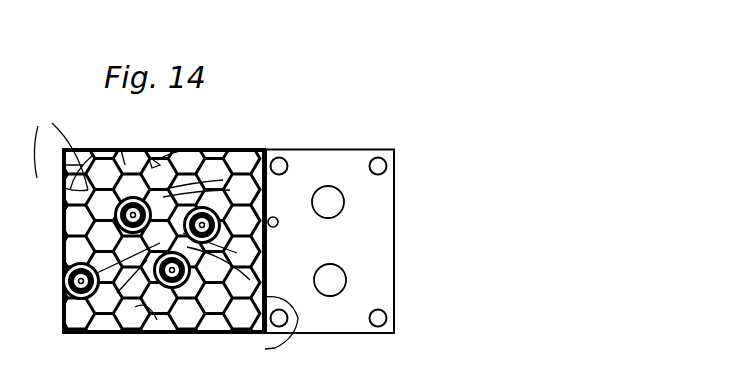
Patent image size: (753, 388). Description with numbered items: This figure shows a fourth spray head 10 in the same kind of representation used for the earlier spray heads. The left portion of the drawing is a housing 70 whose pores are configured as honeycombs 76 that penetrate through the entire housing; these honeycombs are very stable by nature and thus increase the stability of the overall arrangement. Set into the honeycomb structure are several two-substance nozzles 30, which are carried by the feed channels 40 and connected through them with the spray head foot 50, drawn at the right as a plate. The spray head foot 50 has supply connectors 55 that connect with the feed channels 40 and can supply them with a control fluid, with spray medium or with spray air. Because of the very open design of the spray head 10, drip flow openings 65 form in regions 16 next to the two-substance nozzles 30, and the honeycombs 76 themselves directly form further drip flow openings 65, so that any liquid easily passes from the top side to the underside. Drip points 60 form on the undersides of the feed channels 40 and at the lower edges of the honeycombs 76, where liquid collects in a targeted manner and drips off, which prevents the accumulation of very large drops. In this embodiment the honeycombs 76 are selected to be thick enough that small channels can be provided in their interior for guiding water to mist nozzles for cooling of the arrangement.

The spray head 10 is at (320, 117).
The regions 16 is at (137, 164).
The two-substance nozzles 30 is at (88, 150).
The feed channels 40 is at (230, 155).
The spray head foot 50 is at (370, 213).
The supply connectors 55 is at (337, 212).
The drip points 60 is at (280, 347).
The drip flow openings 65 is at (157, 323).
The housing 70 is at (121, 150).
The honeycombs 76 is at (60, 148).